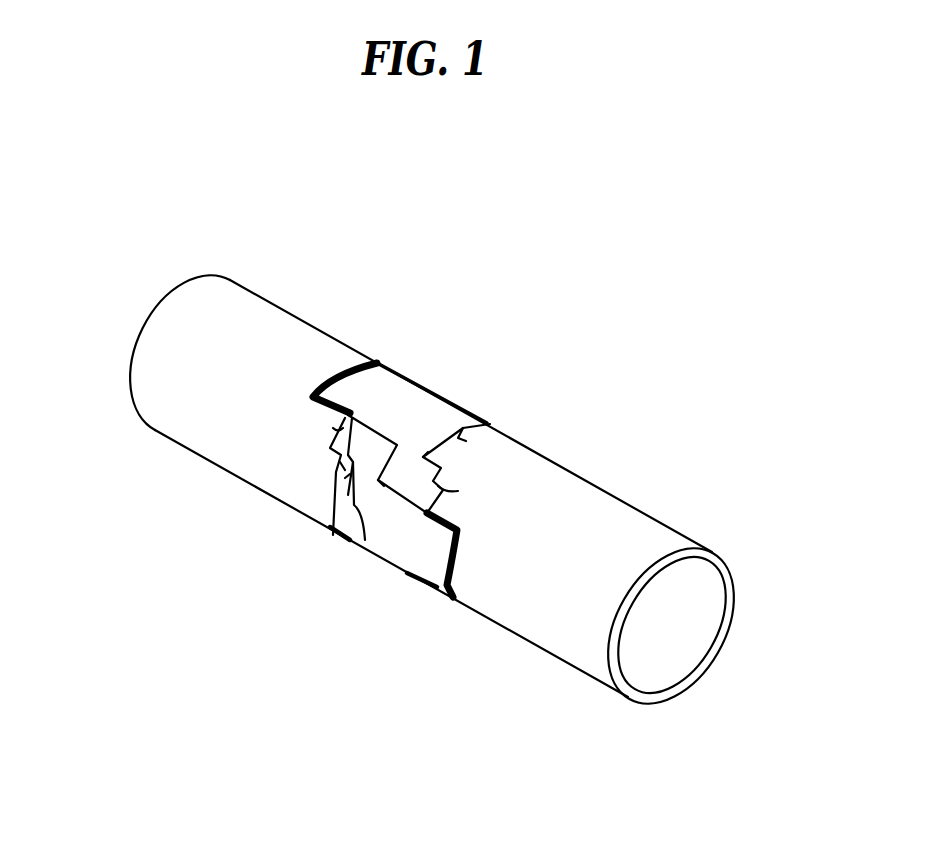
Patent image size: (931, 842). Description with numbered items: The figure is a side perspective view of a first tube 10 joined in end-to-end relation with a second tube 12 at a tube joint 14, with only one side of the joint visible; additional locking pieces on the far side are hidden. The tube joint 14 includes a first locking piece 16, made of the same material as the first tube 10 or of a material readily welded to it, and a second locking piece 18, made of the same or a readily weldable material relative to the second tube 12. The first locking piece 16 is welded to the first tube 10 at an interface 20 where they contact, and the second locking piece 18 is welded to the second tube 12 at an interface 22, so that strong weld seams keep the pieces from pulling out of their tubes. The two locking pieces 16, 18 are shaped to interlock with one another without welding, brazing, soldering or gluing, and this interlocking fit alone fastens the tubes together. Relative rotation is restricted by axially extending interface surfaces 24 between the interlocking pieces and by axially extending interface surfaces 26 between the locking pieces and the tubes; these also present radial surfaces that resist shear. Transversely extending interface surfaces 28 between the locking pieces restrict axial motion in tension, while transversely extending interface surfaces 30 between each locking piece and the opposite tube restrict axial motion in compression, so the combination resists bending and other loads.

The first tube 10 is at (216, 295).
The second tube 12 is at (662, 537).
The tube joint 14 is at (427, 402).
The first locking piece 16 is at (440, 423).
The second locking piece 18 is at (420, 550).
The interface 20 is at (350, 362).
The interface 22 is at (483, 612).
The axially extending interface surfaces 24 is at (343, 458).
The axially extending interface surfaces 26 is at (425, 457).
The transversely extending interface surfaces 28 is at (343, 478).
The transversely extending interface surfaces 30 is at (470, 432).